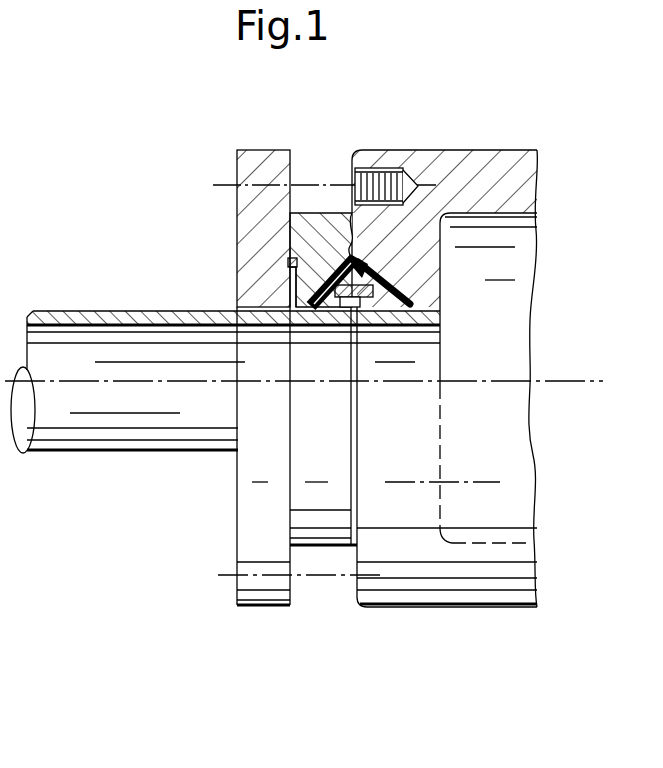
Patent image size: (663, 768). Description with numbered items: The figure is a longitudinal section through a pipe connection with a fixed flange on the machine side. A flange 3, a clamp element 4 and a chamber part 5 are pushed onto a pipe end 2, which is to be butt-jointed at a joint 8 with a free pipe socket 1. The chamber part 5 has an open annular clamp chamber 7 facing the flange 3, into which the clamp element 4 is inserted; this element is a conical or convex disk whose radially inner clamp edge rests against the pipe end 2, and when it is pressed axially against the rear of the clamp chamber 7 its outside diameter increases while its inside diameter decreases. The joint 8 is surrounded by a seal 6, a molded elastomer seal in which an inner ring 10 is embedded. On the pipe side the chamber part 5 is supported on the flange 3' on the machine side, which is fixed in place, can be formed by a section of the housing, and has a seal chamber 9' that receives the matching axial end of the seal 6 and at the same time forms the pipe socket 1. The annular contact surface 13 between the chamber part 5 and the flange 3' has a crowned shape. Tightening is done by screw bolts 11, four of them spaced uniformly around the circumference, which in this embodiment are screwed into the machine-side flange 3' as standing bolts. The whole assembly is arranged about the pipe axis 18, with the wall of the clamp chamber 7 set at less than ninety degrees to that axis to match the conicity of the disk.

The pipe socket 1 is at (440, 288).
The pipe end 2 is at (80, 441).
The flange 3 is at (284, 543).
The flange on the machine side 3' is at (375, 354).
The clamp element 4 is at (288, 262).
The chamber part 5 is at (322, 533).
The seal 6 is at (400, 283).
The clamp chamber 7 is at (290, 301).
The joint 8 is at (360, 356).
The seal chamber 9' is at (266, 255).
The inner ring 10 is at (385, 307).
The screw bolts 11 is at (222, 184).
The annular contact surface 13 is at (352, 213).
The pipe axis 18 is at (580, 384).